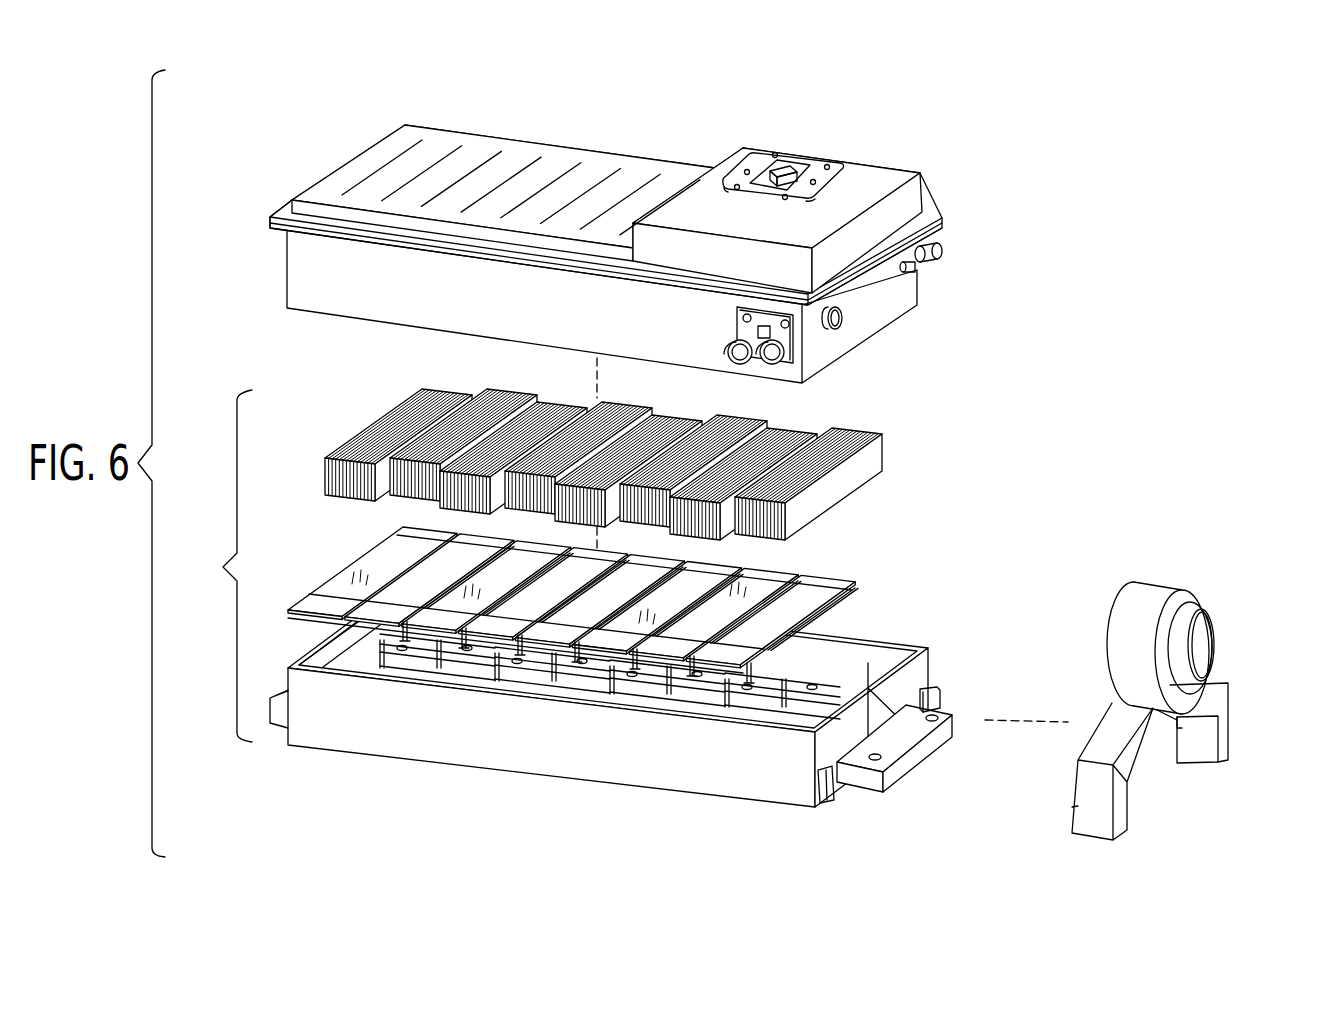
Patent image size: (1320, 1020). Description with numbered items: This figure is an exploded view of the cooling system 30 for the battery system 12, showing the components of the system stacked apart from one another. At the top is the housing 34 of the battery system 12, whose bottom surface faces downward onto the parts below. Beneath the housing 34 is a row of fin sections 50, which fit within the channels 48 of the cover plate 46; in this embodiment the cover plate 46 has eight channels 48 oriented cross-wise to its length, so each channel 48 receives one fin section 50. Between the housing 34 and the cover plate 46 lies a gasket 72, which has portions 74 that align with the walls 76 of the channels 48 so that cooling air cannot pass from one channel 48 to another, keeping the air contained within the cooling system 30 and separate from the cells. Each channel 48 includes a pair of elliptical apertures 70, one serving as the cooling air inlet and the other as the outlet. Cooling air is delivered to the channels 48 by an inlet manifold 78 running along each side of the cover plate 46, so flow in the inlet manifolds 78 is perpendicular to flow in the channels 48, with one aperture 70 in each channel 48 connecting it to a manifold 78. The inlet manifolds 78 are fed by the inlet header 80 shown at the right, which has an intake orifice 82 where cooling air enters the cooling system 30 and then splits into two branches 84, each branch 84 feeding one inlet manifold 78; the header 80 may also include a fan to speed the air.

The battery system 12 is at (583, 478).
The cooling system 30 is at (571, 597).
The housing 34 is at (286, 266).
The cover plate 46 is at (345, 724).
The channels 48 is at (770, 717).
The fin sections 50 is at (555, 395).
The apertures 70 is at (750, 682).
The gasket 72 is at (848, 578).
The portions 74 is at (466, 572).
The walls 76 is at (648, 705).
The inlet manifold 78 is at (940, 706).
The inlet header 80 is at (1190, 711).
The intake orifice 82 is at (1210, 628).
The branches 84 is at (1223, 750).